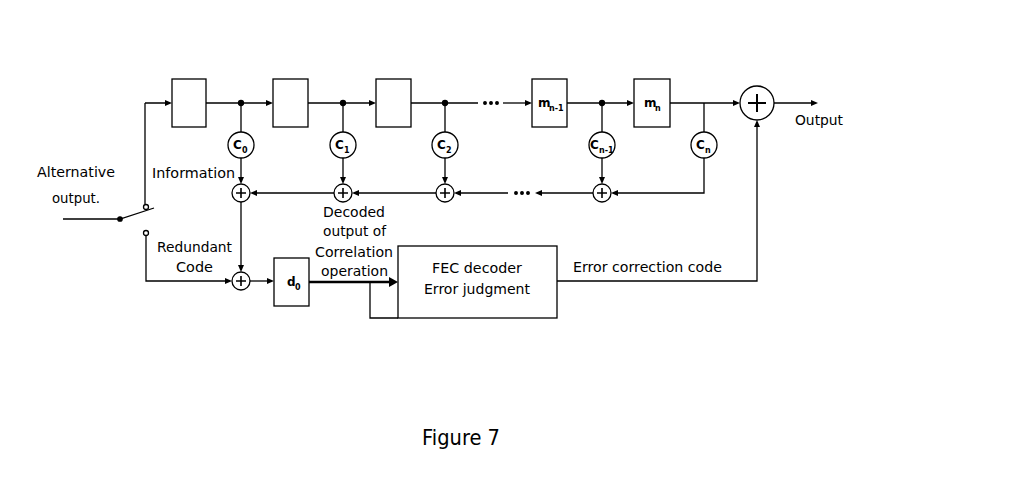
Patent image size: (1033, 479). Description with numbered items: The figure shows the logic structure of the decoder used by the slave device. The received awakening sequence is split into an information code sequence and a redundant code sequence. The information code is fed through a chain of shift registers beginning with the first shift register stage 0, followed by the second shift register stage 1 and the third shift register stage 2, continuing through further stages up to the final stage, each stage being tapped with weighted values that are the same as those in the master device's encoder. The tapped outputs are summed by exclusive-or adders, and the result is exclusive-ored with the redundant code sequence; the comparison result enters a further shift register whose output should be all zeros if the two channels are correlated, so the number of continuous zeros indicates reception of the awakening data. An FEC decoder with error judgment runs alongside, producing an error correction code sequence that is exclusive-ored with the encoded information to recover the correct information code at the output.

The shift register m0 0 is at (189, 103).
The shift register m1 1 is at (290, 103).
The shift register m2 2 is at (393, 103).